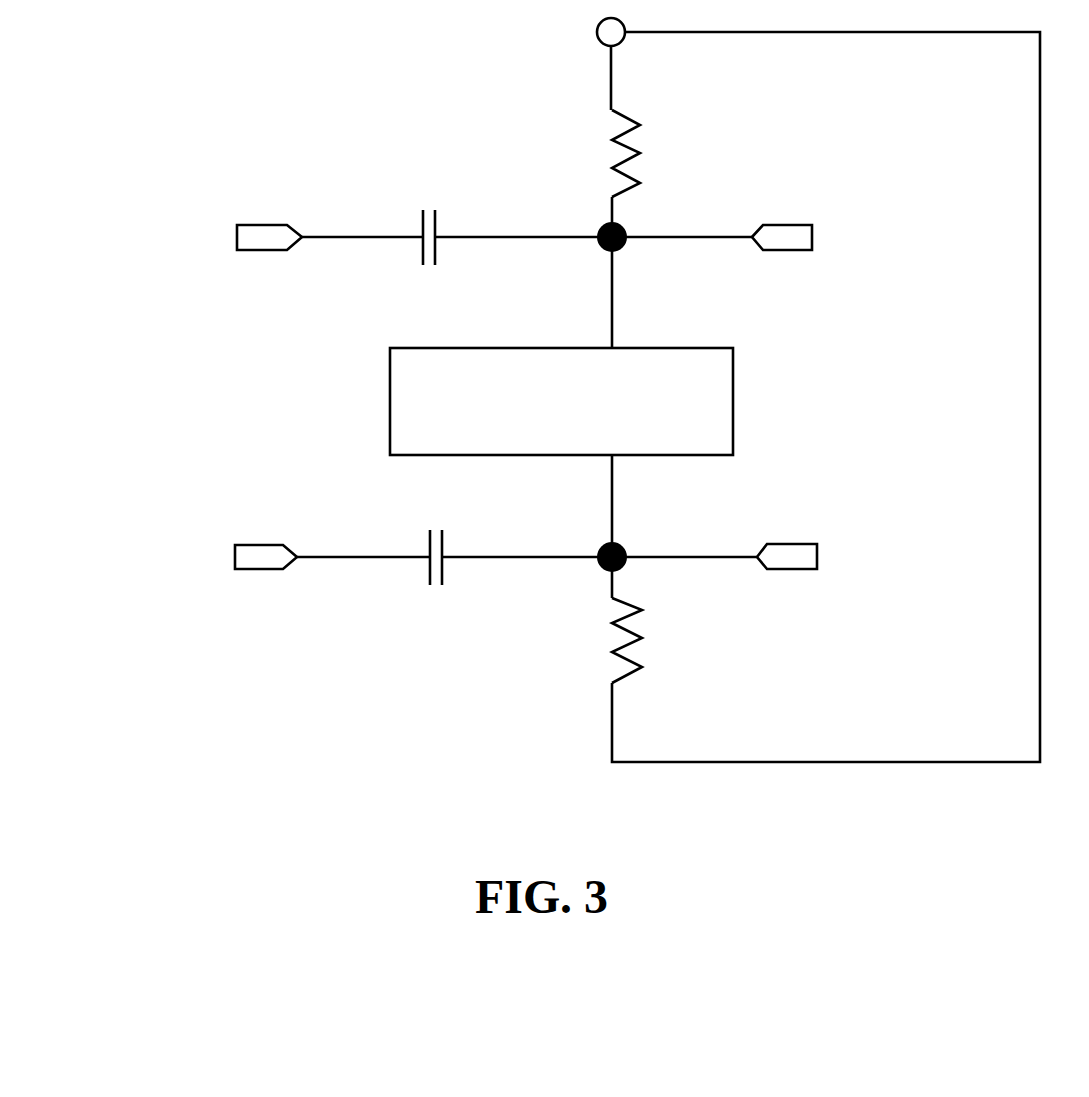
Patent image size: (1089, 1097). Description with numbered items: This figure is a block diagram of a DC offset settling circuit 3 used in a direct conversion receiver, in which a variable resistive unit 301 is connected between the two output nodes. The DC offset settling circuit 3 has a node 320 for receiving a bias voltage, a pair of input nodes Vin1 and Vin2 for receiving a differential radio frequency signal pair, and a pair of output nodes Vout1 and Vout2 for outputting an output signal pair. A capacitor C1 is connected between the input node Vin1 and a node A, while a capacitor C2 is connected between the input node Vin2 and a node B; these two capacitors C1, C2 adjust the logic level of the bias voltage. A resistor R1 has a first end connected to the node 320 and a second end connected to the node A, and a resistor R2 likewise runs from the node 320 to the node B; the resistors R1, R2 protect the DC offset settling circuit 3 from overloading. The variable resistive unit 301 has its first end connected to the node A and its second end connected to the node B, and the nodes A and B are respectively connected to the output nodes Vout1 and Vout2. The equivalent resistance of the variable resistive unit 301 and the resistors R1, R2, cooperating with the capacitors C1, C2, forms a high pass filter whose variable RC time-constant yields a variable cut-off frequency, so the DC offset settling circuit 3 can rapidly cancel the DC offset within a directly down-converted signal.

The DC offset settling circuit 3 is at (184, 43).
The node 320 is at (588, 22).
The variable resistive unit 301 is at (390, 388).
The node A is at (634, 222).
The node B is at (640, 585).
The resistor R1 is at (591, 153).
The resistor R2 is at (594, 640).
The capacitor C1 is at (430, 212).
The capacitor C2 is at (442, 586).
The input node Vin1 is at (213, 237).
The input node Vin2 is at (211, 556).
The output node Vout1 is at (843, 239).
The output node Vout2 is at (851, 554).